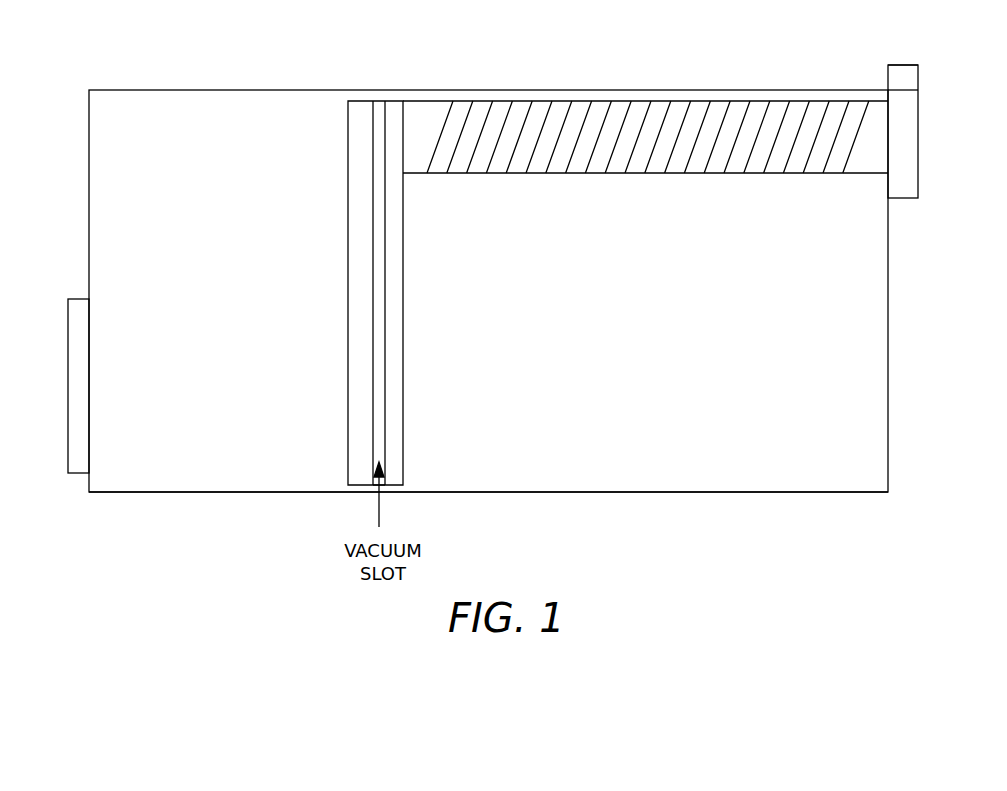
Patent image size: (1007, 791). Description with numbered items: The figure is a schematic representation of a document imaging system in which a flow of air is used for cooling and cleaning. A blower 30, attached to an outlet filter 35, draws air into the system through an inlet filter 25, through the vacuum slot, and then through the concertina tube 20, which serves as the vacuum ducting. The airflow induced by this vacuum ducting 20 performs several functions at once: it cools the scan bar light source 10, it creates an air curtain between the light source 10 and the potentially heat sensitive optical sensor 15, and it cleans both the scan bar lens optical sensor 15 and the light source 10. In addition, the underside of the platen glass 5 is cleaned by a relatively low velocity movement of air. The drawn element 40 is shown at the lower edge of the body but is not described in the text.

The platen glass 5 is at (240, 90).
The scan bar light source 10 is at (348, 293).
The optical sensor 15 is at (403, 380).
The concertina tube 20 is at (498, 165).
The inlet filter 25 is at (68, 435).
The blower 30 is at (918, 170).
The outlet filter 35 is at (903, 63).
The bottom surface 40 is at (765, 492).